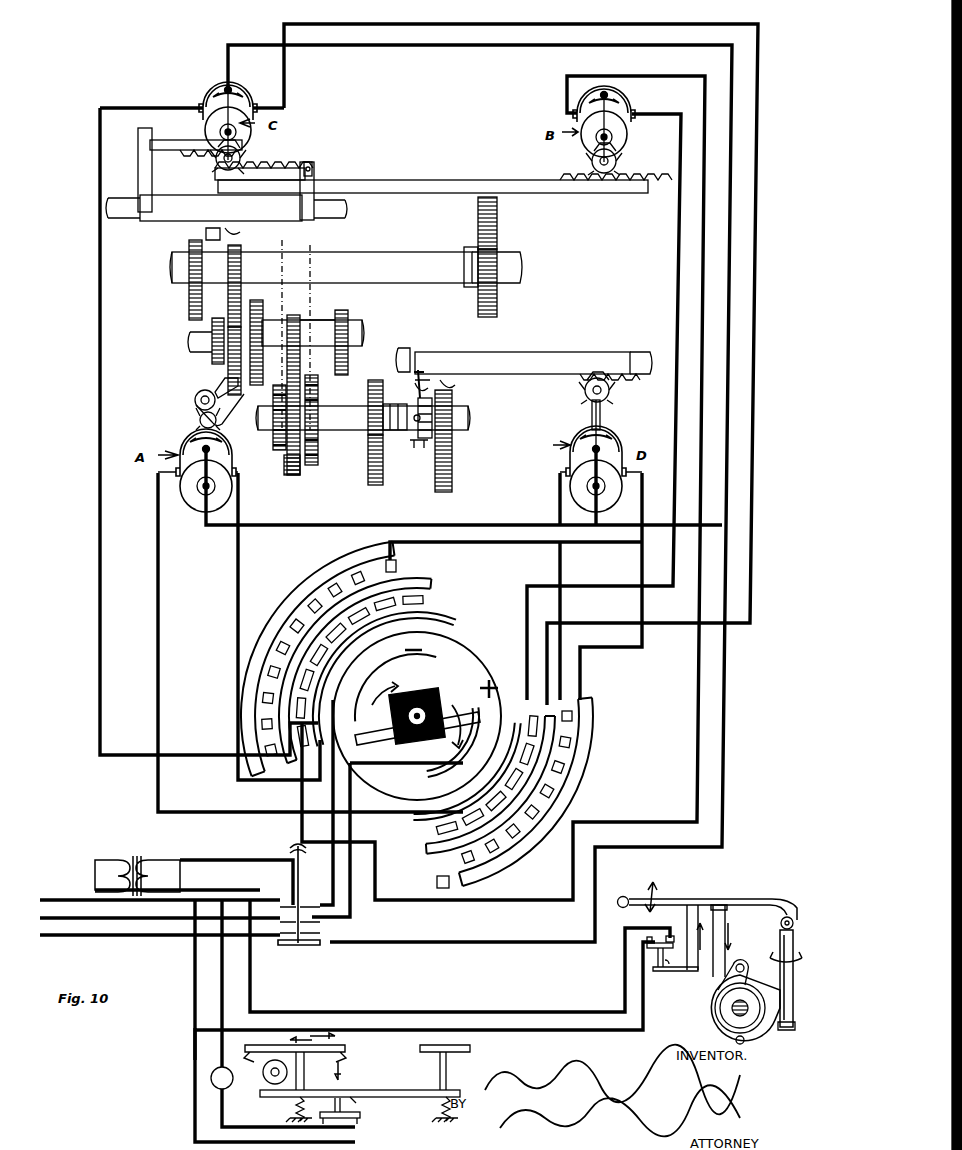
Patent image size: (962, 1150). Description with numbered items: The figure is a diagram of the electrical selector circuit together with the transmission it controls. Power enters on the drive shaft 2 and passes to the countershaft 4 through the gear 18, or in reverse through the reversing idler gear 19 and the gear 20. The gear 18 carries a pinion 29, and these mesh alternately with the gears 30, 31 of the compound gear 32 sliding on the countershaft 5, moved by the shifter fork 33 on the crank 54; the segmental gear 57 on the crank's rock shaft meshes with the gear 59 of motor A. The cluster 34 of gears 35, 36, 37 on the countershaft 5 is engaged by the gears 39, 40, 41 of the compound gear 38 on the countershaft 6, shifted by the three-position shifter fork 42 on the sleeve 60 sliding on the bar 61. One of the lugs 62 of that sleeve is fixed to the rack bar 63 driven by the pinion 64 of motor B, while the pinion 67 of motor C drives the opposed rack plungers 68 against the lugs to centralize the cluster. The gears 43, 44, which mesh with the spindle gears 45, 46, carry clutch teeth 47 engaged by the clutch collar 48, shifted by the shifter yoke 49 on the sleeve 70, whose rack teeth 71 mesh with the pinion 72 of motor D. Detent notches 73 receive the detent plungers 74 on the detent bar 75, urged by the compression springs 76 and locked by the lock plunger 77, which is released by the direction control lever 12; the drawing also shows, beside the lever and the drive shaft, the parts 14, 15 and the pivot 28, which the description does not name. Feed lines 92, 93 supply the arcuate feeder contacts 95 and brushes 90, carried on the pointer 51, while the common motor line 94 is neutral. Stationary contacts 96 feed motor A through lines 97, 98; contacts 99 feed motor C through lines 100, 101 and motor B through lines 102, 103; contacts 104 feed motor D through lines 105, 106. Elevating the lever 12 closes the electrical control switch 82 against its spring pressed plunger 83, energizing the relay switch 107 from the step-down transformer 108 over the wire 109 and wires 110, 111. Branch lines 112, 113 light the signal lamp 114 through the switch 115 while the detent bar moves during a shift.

The power or drive shaft 2 is at (733, 1012).
The countershaft 4 is at (397, 262).
The countershaft 5 is at (360, 332).
The countershaft 6 is at (470, 420).
The direction control lever 12 is at (748, 899).
The stop 14 is at (778, 1030).
The link 15 is at (780, 948).
The gear 18 is at (189, 304).
The reversing idler gear 19 is at (478, 212).
The gear 20 is at (478, 312).
The pivot 28 is at (781, 922).
The pinion 29 is at (241, 264).
The gear 30 is at (228, 304).
The gear 31 is at (214, 362).
The compound gear 32 is at (192, 352).
The shifter fork 33 is at (224, 382).
The cluster of gears 34 is at (322, 320).
The gear 35 is at (263, 298).
The gear 36 is at (300, 318).
The gear 37 is at (342, 312).
The compound gear 38 is at (273, 440).
The gear 39 is at (276, 450).
The gear 40 is at (292, 476).
The gear 41 is at (312, 466).
The shifter fork 42 is at (316, 436).
The gear 43 is at (376, 380).
The gear 44 is at (432, 404).
The gear 45 is at (374, 485).
The gear 46 is at (443, 492).
The clutch teeth 47 is at (450, 440).
The clutch collar 48 is at (400, 432).
The shifter yoke 49 is at (424, 392).
The pointer 51 is at (440, 694).
The crank 54 is at (198, 408).
The segmental gear 57 is at (195, 398).
The gear 59 is at (200, 424).
The sleeve 60 is at (182, 196).
The bar 61 is at (345, 208).
The lugs 62 is at (138, 164).
The rack bar 63 is at (430, 180).
The pinion 64 is at (620, 164).
The pinion 67 is at (244, 164).
The rack plungers 68 is at (170, 140).
The sleeve 70 is at (566, 352).
The rack teeth 71 is at (600, 410).
The pinion 72 is at (612, 396).
The detent notches 73 is at (212, 228).
The detent plungers 74 is at (236, 230).
The detent bar 75 is at (390, 1090).
The compression springs 76 is at (294, 1104).
The lock plunger 77 is at (358, 1104).
The electrical control switch 82 is at (647, 946).
The spring pressed plunger 83 is at (664, 971).
The brushes 90 is at (458, 686).
The feed line 92 is at (72, 918).
The feed line 93 is at (46, 900).
The common motor line 94 is at (240, 45).
The arcuate feeder contacts 95 is at (372, 666).
The stationary contacts 96 is at (390, 598).
The line 97 is at (158, 503).
The line 98 is at (455, 640).
The motor contacts 99 is at (425, 596).
The line 100 is at (164, 108).
The line 101 is at (500, 24).
The line 102 is at (567, 98).
The line 103 is at (662, 114).
The motor contacts 104 is at (396, 566).
The line 105 is at (642, 490).
The line 106 is at (278, 626).
The relay switch 107 is at (290, 874).
The step-down transformer 108 is at (135, 856).
The wire 109 is at (258, 858).
The wire 110 is at (642, 928).
The wire 111 is at (646, 1008).
The branch line 112 is at (195, 1040).
The branch line 113 is at (226, 866).
The signal lamp 114 is at (211, 1078).
The switch 115 is at (342, 1118).